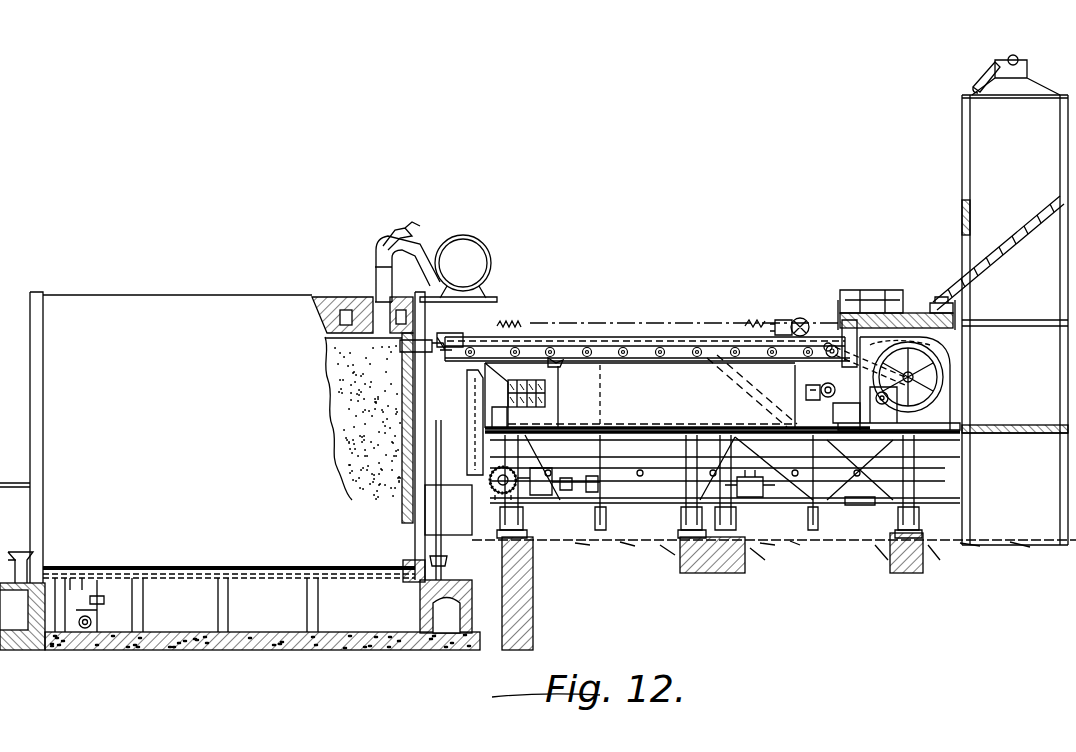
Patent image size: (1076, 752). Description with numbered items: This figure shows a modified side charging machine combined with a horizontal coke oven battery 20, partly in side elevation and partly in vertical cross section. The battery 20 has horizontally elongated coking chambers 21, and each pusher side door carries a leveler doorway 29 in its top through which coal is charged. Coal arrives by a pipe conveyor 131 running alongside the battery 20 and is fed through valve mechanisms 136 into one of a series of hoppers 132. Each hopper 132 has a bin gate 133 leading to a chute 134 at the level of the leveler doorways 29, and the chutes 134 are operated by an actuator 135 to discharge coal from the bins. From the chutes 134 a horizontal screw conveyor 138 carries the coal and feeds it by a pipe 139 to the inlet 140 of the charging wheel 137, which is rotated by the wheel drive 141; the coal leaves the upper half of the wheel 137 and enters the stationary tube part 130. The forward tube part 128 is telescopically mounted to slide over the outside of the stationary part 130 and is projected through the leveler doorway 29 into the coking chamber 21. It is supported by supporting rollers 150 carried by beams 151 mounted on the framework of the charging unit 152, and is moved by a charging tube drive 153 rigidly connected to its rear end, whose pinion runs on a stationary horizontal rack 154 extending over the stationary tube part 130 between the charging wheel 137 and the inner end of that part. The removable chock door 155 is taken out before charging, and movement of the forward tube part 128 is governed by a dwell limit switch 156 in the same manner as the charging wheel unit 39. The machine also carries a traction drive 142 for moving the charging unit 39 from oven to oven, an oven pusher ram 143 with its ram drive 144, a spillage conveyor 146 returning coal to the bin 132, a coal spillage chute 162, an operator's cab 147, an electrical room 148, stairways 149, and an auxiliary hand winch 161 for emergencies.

The horizontal coking retort oven battery 20 is at (238, 424).
The coking chamber 21 is at (333, 356).
The leveler doorway 29 is at (325, 333).
The charging unit 39 is at (690, 410).
The forward tube part 128 is at (532, 337).
The stationary tube part 130 is at (598, 343).
The pipe conveyor 131 is at (1013, 55).
The hopper 132 is at (1015, 302).
The bin gate 133 is at (968, 263).
The chute 134 is at (952, 272).
The actuator 135 is at (957, 311).
The valve mechanism 136 is at (975, 72).
The charging wheel 137 is at (934, 395).
The horizontal screw conveyor 138 is at (912, 316).
The pipe 139 is at (830, 372).
The inlet 140 is at (820, 392).
The wheel drive 141 is at (893, 416).
The traction drive 142 is at (752, 495).
The oven pusher ram 143 is at (636, 449).
The ram drive 144 is at (607, 492).
The spillage conveyor 146 is at (472, 521).
The operator's cab 147 is at (548, 392).
The electrical room 148 is at (698, 400).
The stairway 149 is at (730, 372).
The supporting roller 150 is at (497, 322).
The beam 151 is at (556, 364).
The charging unit 152 is at (678, 418).
The charging tube drive 153 is at (790, 319).
The rack 154 is at (507, 322).
The chock door 155 is at (432, 352).
The dwell limit switch 156 is at (440, 338).
The auxiliary hand winch 161 is at (813, 400).
The coal spillage chute 162 is at (468, 430).